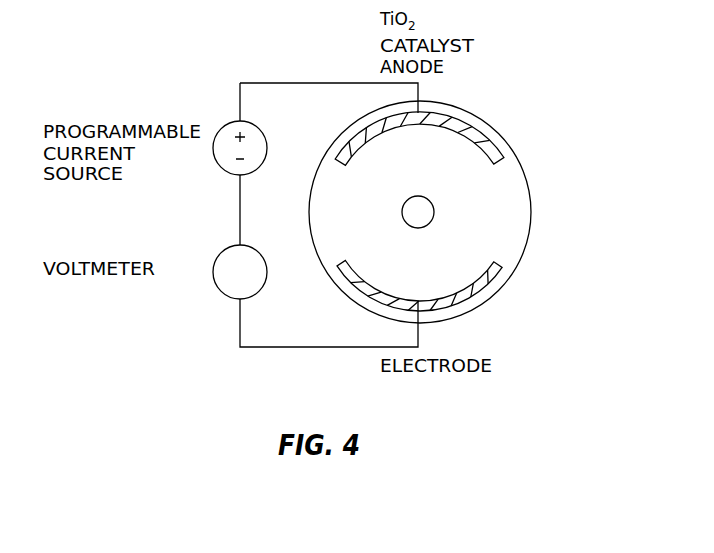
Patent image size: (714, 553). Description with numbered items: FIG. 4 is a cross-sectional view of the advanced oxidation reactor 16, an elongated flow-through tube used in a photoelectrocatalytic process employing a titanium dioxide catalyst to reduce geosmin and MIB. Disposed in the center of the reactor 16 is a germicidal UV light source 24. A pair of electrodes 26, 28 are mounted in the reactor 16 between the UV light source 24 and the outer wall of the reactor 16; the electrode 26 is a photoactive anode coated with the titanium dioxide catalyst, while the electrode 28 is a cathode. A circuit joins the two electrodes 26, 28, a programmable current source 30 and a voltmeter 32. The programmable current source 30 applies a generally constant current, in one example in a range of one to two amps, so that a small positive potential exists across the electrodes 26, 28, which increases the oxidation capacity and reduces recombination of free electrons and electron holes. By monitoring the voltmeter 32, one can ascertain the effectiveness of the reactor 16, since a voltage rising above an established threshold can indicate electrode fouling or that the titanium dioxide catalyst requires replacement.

The advanced oxidation reactor 16 is at (526, 245).
The germicidal UV light source 24 is at (420, 207).
The electrode (photoactive anode) 26 is at (452, 118).
The electrode (cathode) 28 is at (478, 298).
The programmable current source 30 is at (218, 165).
The voltmeter 32 is at (220, 292).